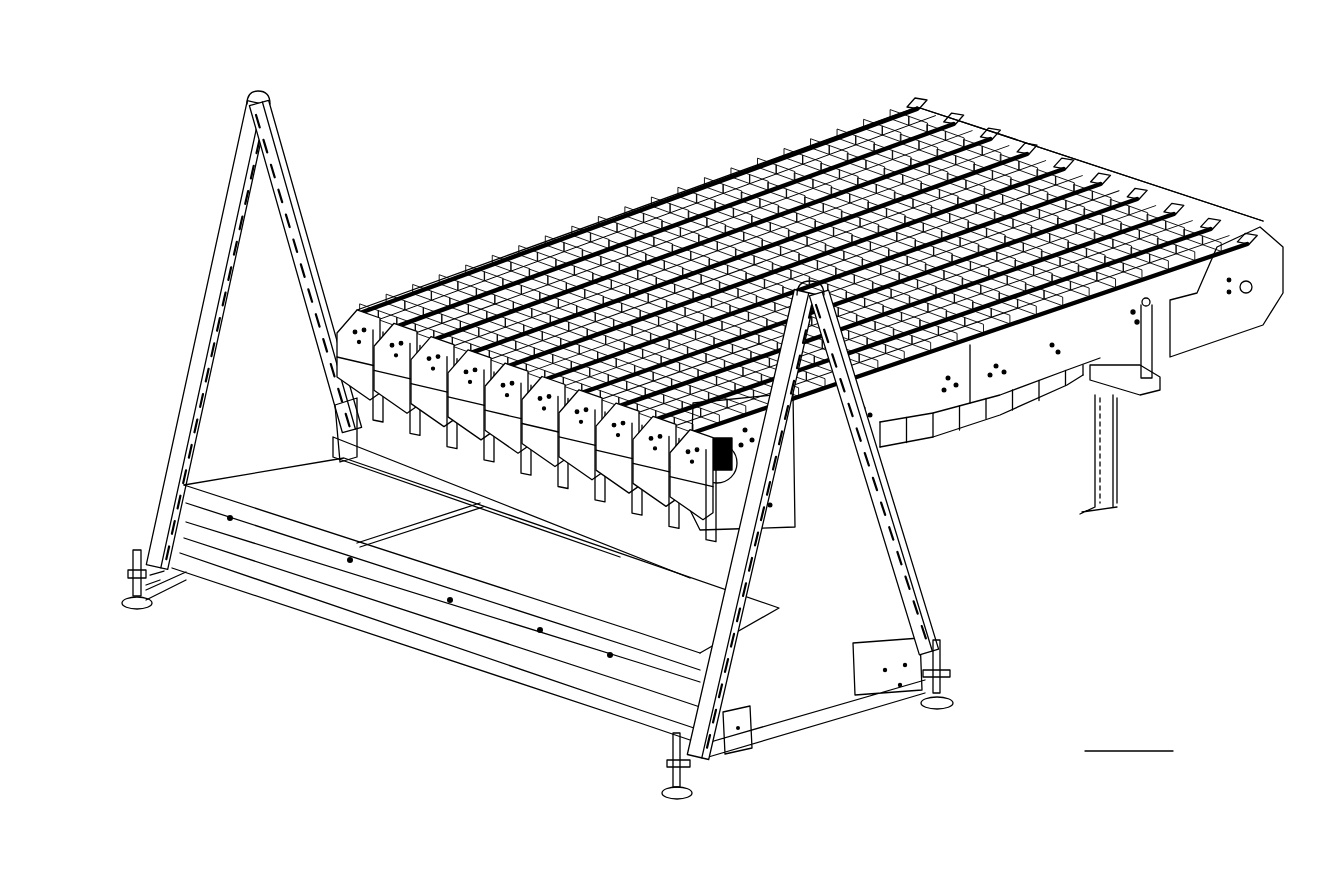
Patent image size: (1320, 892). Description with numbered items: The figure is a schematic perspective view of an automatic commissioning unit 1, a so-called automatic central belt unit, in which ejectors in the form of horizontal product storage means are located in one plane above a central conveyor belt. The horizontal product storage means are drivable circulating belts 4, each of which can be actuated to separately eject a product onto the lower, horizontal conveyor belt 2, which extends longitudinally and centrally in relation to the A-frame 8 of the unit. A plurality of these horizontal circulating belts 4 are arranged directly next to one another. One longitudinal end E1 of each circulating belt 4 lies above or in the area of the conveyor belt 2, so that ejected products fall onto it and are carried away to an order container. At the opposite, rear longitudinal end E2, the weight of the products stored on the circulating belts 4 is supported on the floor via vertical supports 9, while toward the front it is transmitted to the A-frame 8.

The automatic commissioning unit 1 is at (468, 150).
The conveyor belt 2 is at (527, 582).
The circulating belt 4 is at (1016, 148).
The A-frame 8 is at (305, 216).
The vertical supports 9 is at (1113, 488).
The longitudinal end of the circulating belt E1 is at (524, 419).
The rear longitudinal end of the circulating belt E2 is at (1076, 142).